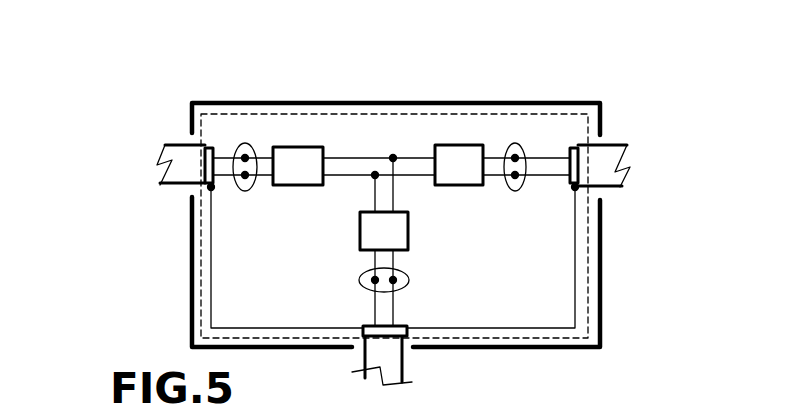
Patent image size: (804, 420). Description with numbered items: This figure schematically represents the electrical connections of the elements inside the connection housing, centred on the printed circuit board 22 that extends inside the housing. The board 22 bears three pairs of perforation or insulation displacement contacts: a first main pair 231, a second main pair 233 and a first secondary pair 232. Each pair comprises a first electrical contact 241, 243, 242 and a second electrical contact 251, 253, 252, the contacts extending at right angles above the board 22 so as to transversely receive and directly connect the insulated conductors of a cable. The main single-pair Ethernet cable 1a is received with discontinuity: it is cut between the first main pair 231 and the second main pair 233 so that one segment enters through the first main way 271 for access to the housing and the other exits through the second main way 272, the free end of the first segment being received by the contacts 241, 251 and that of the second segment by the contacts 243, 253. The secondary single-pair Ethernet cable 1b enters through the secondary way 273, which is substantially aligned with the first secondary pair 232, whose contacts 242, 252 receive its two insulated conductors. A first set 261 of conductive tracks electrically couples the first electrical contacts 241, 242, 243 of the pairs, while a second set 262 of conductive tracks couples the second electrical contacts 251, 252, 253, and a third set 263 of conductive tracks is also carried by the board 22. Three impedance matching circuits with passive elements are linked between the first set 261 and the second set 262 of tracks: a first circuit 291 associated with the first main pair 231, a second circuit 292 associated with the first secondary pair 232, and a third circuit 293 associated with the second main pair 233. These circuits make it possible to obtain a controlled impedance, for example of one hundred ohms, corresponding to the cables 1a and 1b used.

The printed circuit board 22 is at (590, 267).
The first main pair of electrical contacts 231 is at (238, 147).
The first secondary pair of electrical contacts 232 is at (407, 280).
The second main pair of electrical contacts 233 is at (510, 147).
The first electrical contact 241 is at (250, 158).
The first electrical contact 242 is at (405, 270).
The first electrical contact 243 is at (518, 156).
The second electrical contact 251 is at (248, 190).
The second electrical contact 252 is at (360, 270).
The second electrical contact 253 is at (518, 192).
The first set of conductive tracks 261 is at (413, 158).
The second set of conductive tracks 262 is at (405, 176).
The third set of conductive tracks 263 is at (548, 330).
The first main way for access to the housing 271 is at (188, 195).
The second main way for access to the housing 272 is at (605, 195).
The secondary way for access to the housing 273 is at (358, 351).
The first impedance matching circuit 291 is at (292, 160).
The second impedance matching circuit 292 is at (362, 228).
The third impedance matching circuit 293 is at (472, 158).
The main single-pair Ethernet cable 1a is at (171, 136).
The secondary single-pair Ethernet cable 1b is at (412, 365).